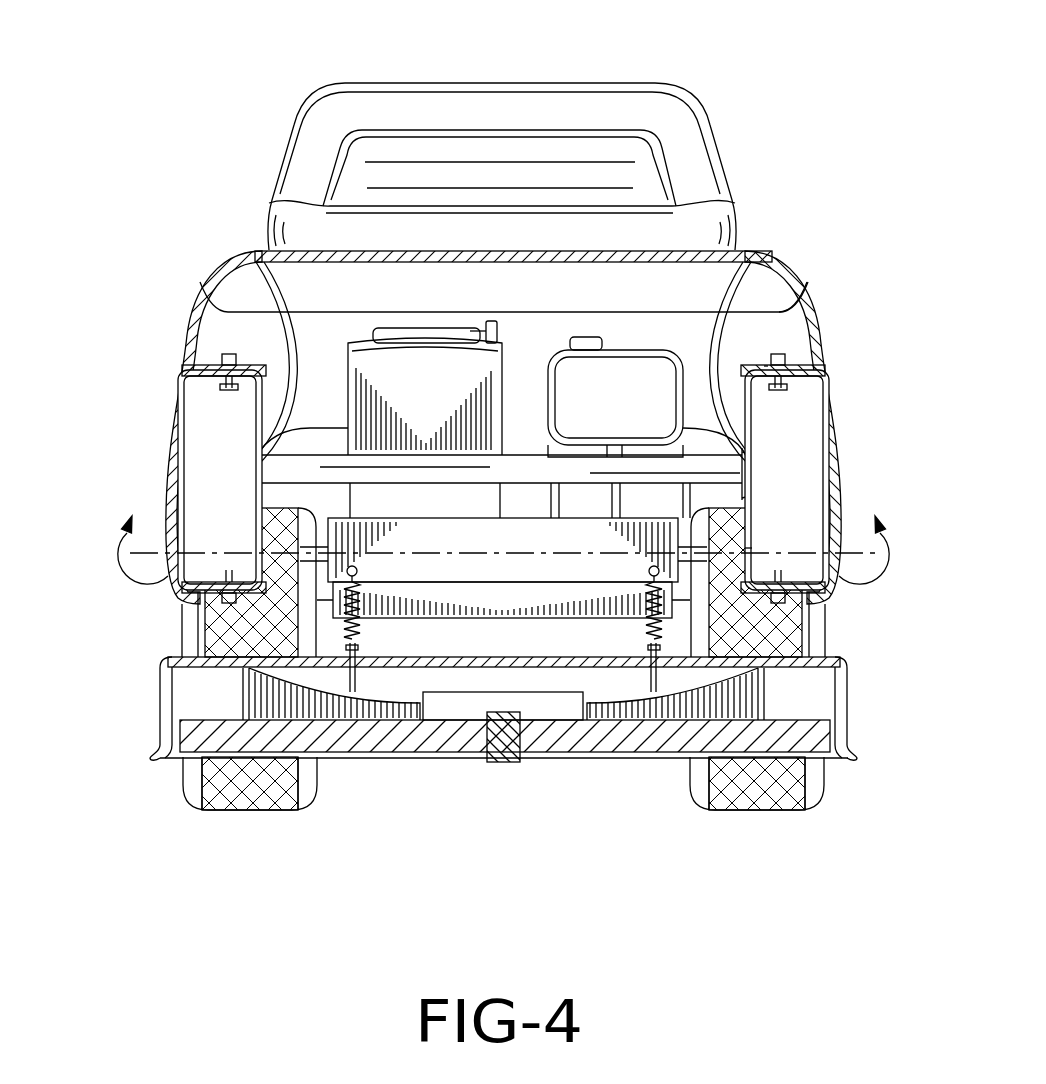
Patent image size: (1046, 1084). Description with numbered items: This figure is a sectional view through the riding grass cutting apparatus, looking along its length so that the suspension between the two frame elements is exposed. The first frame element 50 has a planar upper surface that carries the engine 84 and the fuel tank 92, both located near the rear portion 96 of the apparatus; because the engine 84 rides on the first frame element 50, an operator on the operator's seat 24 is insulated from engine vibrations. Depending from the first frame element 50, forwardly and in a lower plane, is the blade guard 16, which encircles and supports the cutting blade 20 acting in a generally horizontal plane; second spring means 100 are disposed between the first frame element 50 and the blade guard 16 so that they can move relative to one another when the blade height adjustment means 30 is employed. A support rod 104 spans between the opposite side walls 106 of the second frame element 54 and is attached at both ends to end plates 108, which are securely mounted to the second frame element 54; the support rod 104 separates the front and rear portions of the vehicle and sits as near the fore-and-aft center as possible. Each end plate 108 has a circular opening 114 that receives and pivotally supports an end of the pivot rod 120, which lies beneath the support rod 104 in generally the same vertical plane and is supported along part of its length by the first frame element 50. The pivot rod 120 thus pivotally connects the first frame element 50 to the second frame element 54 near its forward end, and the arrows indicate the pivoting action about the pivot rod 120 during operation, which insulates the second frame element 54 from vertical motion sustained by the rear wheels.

The blade guard 16 is at (848, 690).
The cutting blade 20 is at (345, 733).
The operator's seat 24 is at (695, 153).
The blade height adjustment means 30 is at (647, 672).
The first frame element 50 is at (398, 570).
The second frame element 54 is at (185, 333).
The engine 84 is at (362, 357).
The fuel tank 92 is at (670, 360).
The rear portion 96 is at (244, 106).
The second spring means 100 is at (640, 623).
The support rod 104 is at (710, 465).
The side walls 106 is at (178, 412).
The end plates 108 is at (760, 378).
The circular opening 114 is at (745, 550).
The pivot rod 120 is at (305, 555).